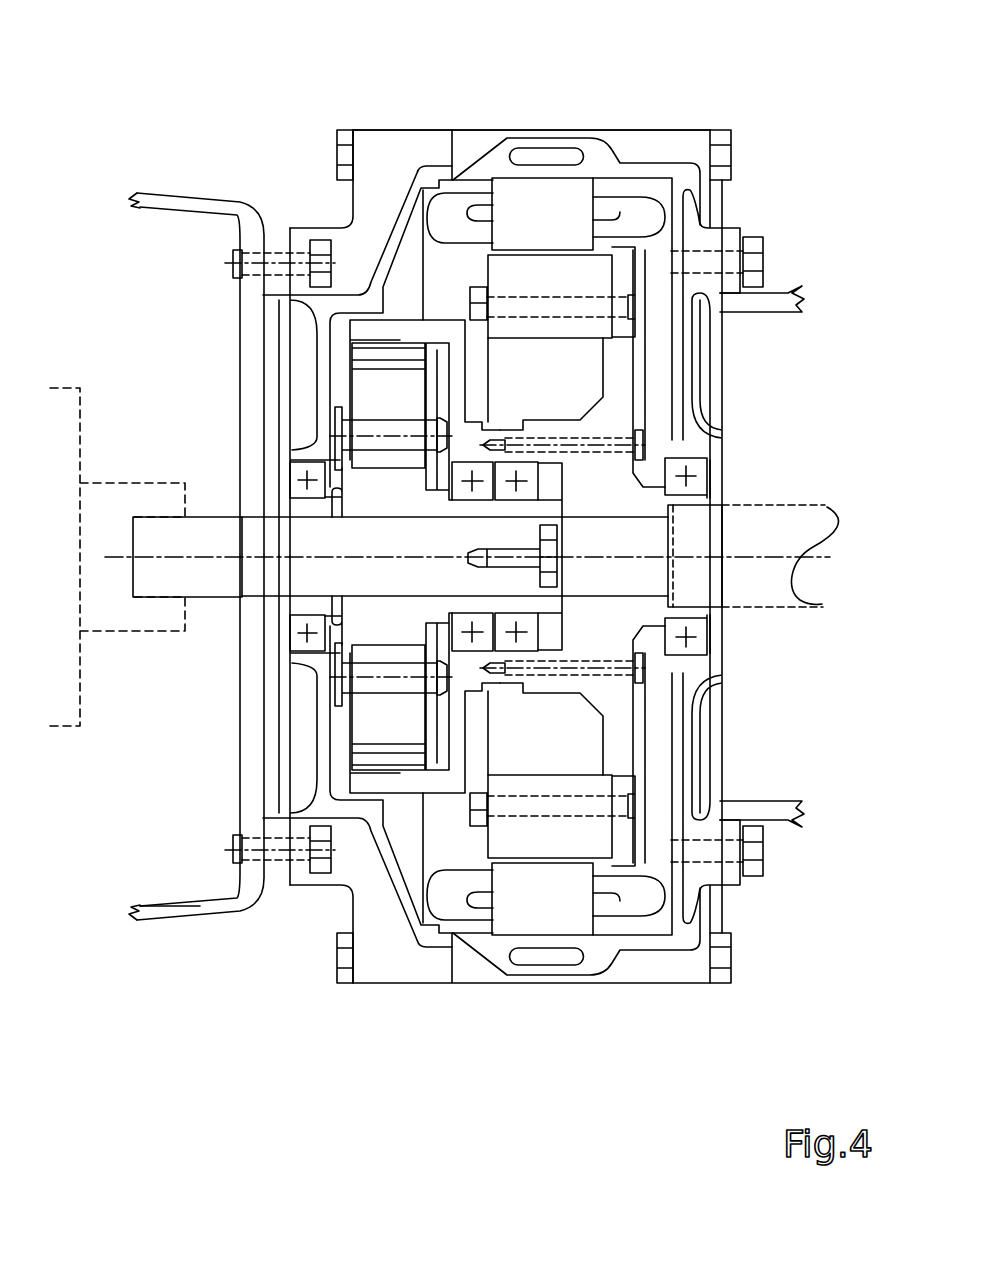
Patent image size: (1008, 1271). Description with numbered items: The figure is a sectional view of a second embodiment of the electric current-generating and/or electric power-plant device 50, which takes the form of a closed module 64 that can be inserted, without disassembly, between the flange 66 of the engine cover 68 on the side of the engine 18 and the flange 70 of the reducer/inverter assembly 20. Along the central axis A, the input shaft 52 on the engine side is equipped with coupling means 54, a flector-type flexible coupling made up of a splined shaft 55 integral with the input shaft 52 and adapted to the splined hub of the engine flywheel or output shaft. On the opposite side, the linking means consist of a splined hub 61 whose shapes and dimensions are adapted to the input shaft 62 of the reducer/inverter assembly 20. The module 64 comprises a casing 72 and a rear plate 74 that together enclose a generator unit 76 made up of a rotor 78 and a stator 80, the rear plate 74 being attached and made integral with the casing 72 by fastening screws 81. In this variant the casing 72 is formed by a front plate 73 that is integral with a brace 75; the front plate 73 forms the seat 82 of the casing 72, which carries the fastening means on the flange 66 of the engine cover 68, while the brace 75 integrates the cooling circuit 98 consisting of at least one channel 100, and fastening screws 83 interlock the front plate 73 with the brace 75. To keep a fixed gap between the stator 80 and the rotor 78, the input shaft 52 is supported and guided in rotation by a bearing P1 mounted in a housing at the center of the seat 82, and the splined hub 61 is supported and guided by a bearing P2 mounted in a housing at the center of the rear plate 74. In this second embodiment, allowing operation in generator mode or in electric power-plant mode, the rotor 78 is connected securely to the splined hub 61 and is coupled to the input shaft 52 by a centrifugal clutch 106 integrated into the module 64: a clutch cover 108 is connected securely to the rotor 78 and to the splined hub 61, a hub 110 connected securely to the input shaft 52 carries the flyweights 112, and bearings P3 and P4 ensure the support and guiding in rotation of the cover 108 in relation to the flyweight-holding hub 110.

The engine 18 is at (207, 372).
The reducer/inverter assembly 20 is at (774, 277).
The electric current-generating and/or electric power-plant device 50 is at (292, 131).
The input shaft 52 is at (353, 538).
The coupling means 54 is at (160, 472).
The splined shaft 55 is at (200, 583).
The splined hub 61 is at (650, 585).
The input shaft of the reducer/inverter assembly 62 is at (740, 600).
The closed module 64 is at (465, 164).
The flange of the engine cover 66 is at (290, 880).
The engine cover 68 is at (207, 907).
The flange of the reducer/inverter assembly 70 is at (747, 810).
The casing 72 is at (369, 131).
The front plate 73 is at (420, 170).
The rear plate 74 is at (683, 397).
The brace 75 is at (593, 950).
The generator unit 76 is at (602, 908).
The rotor 78 is at (594, 282).
The stator 80 is at (523, 910).
The fastening screws 81 is at (724, 153).
The seat of the casing 82 is at (323, 383).
The fastening screws 83 is at (337, 153).
The cooling circuit 98 is at (565, 949).
The channel 100 is at (535, 162).
The clutch 106 is at (416, 855).
The clutch cover 108 is at (433, 780).
The hub 110 is at (370, 617).
The flyweights 112 is at (400, 723).
The axis A is at (740, 555).
The bearing P1 is at (290, 642).
The bearing P2 is at (700, 470).
The bearing P3 is at (482, 651).
The bearing P4 is at (528, 651).